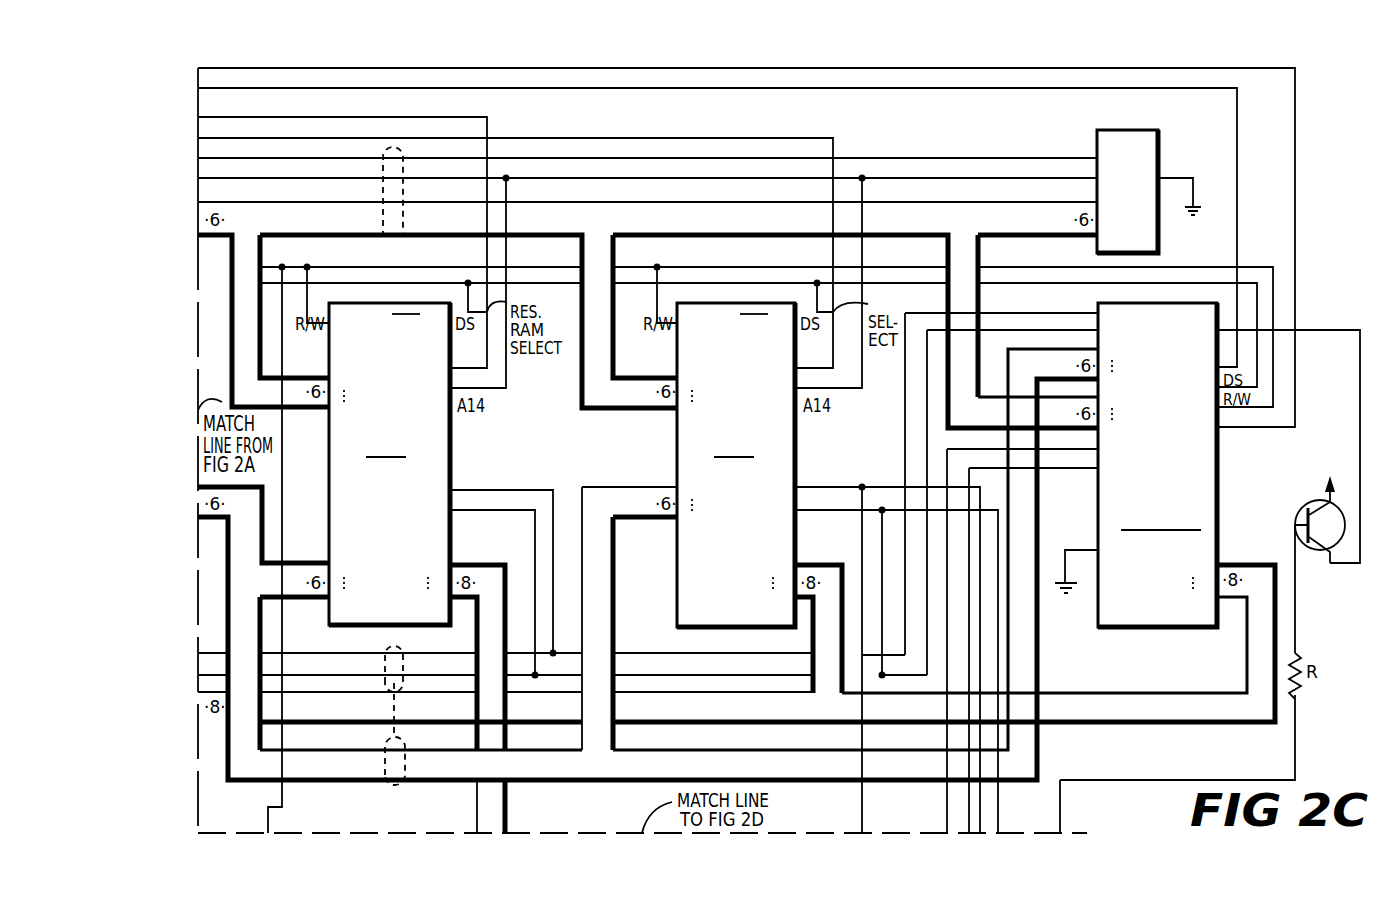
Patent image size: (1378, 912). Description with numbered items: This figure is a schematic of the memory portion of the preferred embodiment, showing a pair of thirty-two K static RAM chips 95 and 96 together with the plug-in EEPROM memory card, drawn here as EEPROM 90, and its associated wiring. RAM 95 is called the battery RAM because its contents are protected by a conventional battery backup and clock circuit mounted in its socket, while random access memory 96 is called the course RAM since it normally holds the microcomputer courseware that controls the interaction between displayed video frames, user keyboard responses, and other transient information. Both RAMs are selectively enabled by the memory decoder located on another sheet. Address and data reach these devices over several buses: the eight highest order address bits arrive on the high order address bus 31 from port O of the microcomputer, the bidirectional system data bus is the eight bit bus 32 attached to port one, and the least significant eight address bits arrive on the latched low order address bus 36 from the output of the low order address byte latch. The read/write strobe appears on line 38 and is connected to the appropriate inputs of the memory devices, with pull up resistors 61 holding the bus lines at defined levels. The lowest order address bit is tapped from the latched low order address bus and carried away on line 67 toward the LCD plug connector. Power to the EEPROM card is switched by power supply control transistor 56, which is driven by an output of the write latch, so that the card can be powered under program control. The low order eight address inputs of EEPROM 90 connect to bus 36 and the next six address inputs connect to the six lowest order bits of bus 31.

The 8 bit bus 31 is at (388, 238).
The 8 bit bus 32 is at (385, 722).
The 8 bit bus 36 is at (398, 788).
The read/write strobe line 38 is at (718, 267).
The pull up resistors 61 is at (1119, 130).
The line 67 is at (812, 488).
The EEPROM on card 14 90 is at (1218, 486).
The static RAM chip 95 is at (452, 453).
The static RAM chip 96 is at (797, 453).
The power supply control transistor 56 is at (1309, 553).